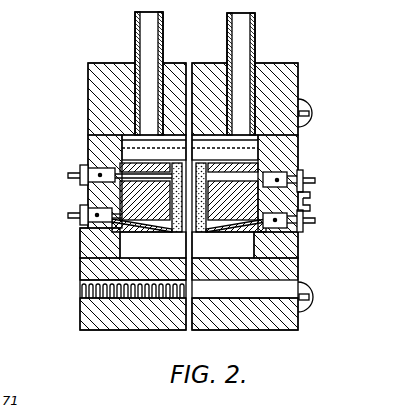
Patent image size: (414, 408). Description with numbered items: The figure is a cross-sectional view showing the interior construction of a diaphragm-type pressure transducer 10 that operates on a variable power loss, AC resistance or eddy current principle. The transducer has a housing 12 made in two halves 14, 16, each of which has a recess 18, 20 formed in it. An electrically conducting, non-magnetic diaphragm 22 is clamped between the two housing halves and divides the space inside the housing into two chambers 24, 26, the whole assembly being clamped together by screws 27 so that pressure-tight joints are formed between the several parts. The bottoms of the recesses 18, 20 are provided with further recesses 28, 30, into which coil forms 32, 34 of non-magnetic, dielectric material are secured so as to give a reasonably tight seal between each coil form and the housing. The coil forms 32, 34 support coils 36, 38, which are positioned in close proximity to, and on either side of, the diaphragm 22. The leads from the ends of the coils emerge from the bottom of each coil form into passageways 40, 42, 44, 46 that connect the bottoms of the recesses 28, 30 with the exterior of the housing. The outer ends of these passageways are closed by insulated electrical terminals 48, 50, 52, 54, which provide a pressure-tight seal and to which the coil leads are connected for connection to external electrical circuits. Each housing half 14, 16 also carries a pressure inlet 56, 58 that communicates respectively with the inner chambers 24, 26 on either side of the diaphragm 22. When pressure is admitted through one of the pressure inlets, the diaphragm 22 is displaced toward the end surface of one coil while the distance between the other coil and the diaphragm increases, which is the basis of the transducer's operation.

The pressure transducer 10 is at (305, 71).
The housing 12 is at (300, 90).
The housing half 14 is at (88, 90).
The housing half 16 is at (280, 68).
The recess 18 is at (128, 152).
The recess 20 is at (258, 152).
The diaphragm 22 is at (192, 247).
The chamber 24 is at (125, 252).
The chamber 26 is at (272, 262).
The screws 27 is at (312, 113).
The recess 28 is at (88, 232).
The recess 30 is at (268, 174).
The coil form 32 is at (125, 198).
The coil form 34 is at (275, 243).
The coil 36 is at (153, 245).
The coil 38 is at (206, 163).
The passageway 40 is at (100, 169).
The passageway 42 is at (95, 212).
The passageway 44 is at (310, 195).
The passageway 46 is at (310, 208).
The insulated electrical terminal 48 is at (68, 175).
The insulated electrical terminal 50 is at (68, 218).
The insulated electrical terminal 52 is at (318, 181).
The insulated electrical terminal 54 is at (310, 223).
The pressure inlet 56 is at (135, 27).
The pressure inlet 58 is at (231, 28).